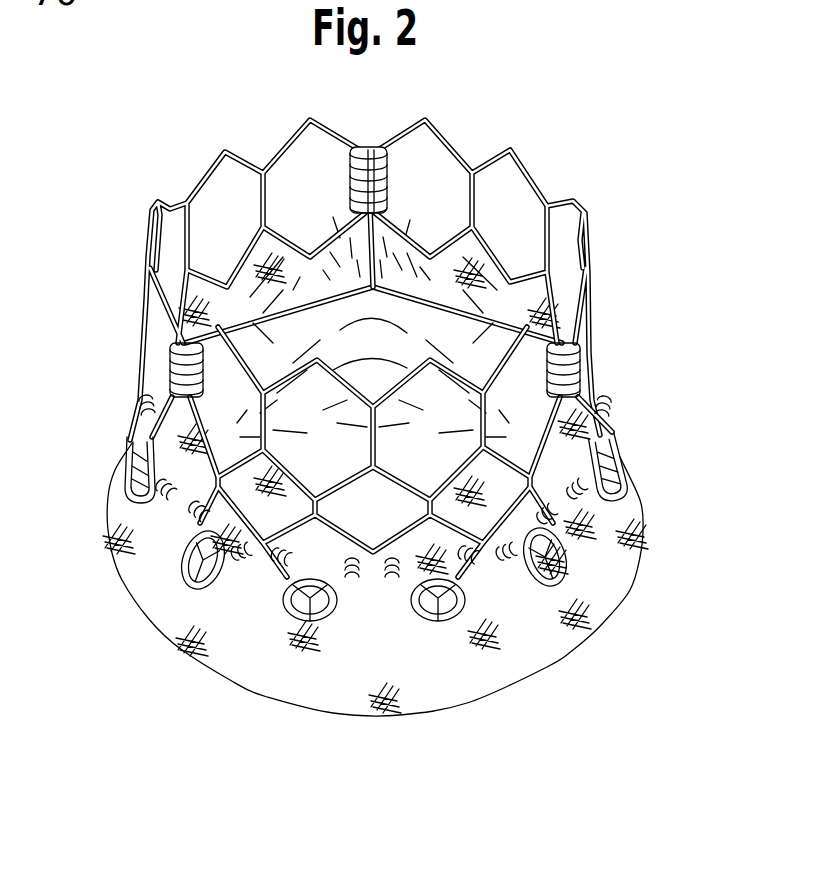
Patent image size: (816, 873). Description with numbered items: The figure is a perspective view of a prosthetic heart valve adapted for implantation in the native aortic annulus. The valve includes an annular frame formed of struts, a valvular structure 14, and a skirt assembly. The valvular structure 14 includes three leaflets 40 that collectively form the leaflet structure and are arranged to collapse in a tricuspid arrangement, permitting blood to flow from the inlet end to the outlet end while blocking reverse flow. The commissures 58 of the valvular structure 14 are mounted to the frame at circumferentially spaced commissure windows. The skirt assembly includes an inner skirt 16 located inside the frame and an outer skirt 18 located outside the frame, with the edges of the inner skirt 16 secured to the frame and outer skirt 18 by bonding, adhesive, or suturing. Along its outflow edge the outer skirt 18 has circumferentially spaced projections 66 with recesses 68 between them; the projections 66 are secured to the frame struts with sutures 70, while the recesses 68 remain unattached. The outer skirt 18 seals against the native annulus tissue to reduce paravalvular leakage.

The valvular structure 14 is at (220, 408).
The inner skirt 16 is at (560, 296).
The outer skirt 18 is at (603, 600).
The leaflets 40 is at (323, 268).
The commissures 58 is at (380, 147).
The projections 66 is at (490, 557).
The recesses 68 is at (453, 620).
The sutures 70 is at (275, 562).